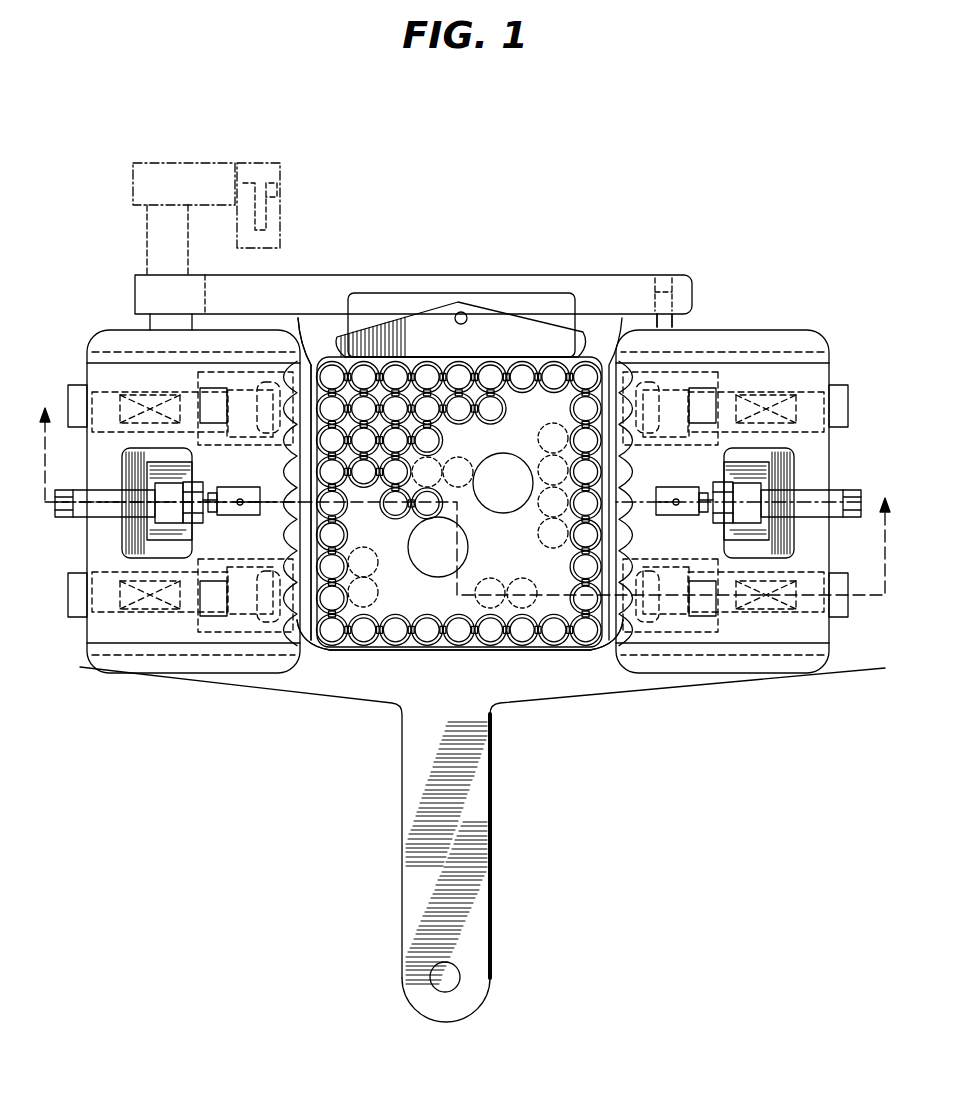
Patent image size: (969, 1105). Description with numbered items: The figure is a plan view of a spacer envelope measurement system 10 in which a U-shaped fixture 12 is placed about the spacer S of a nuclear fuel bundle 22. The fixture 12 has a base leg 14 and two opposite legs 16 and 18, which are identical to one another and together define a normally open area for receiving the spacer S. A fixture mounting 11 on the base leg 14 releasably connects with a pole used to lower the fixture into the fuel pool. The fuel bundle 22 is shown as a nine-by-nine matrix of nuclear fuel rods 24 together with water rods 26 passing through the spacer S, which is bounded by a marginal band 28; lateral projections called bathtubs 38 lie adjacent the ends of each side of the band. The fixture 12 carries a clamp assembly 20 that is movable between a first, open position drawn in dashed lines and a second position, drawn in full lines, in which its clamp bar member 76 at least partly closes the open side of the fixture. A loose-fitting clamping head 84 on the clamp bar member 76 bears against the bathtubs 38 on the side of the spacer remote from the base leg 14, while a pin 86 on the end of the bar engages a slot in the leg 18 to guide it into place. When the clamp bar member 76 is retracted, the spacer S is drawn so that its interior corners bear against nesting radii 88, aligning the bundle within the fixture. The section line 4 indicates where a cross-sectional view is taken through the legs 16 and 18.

The spacer envelope measurement system 10 is at (682, 798).
The fixture mounting 11 is at (450, 978).
The fixture 12 is at (338, 676).
The base leg 14 is at (467, 799).
The leg 16 is at (123, 340).
The leg 18 is at (723, 327).
The clamp assembly 20 is at (312, 152).
The nuclear fuel bundle 22 is at (525, 564).
The nuclear fuel rods 24 is at (355, 372).
The water rods 26 is at (517, 465).
The marginal band 28 is at (410, 645).
The bathtub 38 is at (322, 370).
The clamp bar member 76 is at (388, 275).
The clamping head 84 is at (475, 337).
The pin 86 is at (680, 320).
The nesting radii 88 is at (320, 653).
The spacer S is at (612, 505).
The section line 4 is at (463, 521).